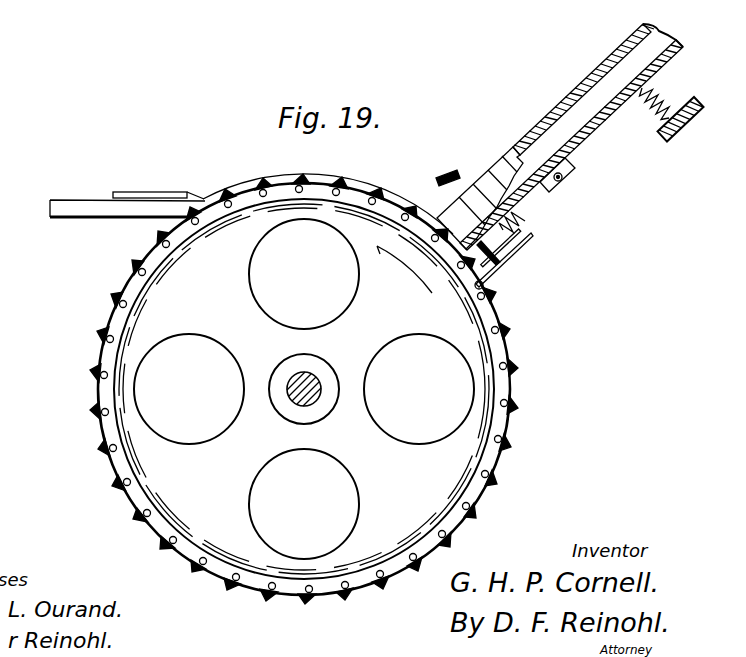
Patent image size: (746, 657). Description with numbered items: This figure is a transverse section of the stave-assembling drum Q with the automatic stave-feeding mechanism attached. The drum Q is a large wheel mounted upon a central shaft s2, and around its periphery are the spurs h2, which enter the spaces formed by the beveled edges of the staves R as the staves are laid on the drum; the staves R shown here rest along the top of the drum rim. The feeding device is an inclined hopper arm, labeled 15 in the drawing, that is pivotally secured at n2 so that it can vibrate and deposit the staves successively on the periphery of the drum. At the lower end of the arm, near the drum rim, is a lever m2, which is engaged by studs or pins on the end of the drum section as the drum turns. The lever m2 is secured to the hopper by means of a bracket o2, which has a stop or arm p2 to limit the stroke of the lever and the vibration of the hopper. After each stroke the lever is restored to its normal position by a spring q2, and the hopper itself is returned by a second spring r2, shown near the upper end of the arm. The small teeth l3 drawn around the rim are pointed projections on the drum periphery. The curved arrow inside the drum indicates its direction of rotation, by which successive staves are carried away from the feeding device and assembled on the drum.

The stave-assembling drum Q is at (319, 389).
The spurs h2 is at (118, 299).
The spikes l3 is at (106, 338).
The shaft s2 is at (312, 381).
The staves R is at (332, 173).
The arm 15 is at (560, 137).
The pivot n2 is at (566, 180).
The spring q2 is at (522, 231).
The bracket o2 is at (500, 252).
The stop or arm p2 is at (512, 256).
The lever m2 is at (484, 286).
The spring r2 is at (656, 92).